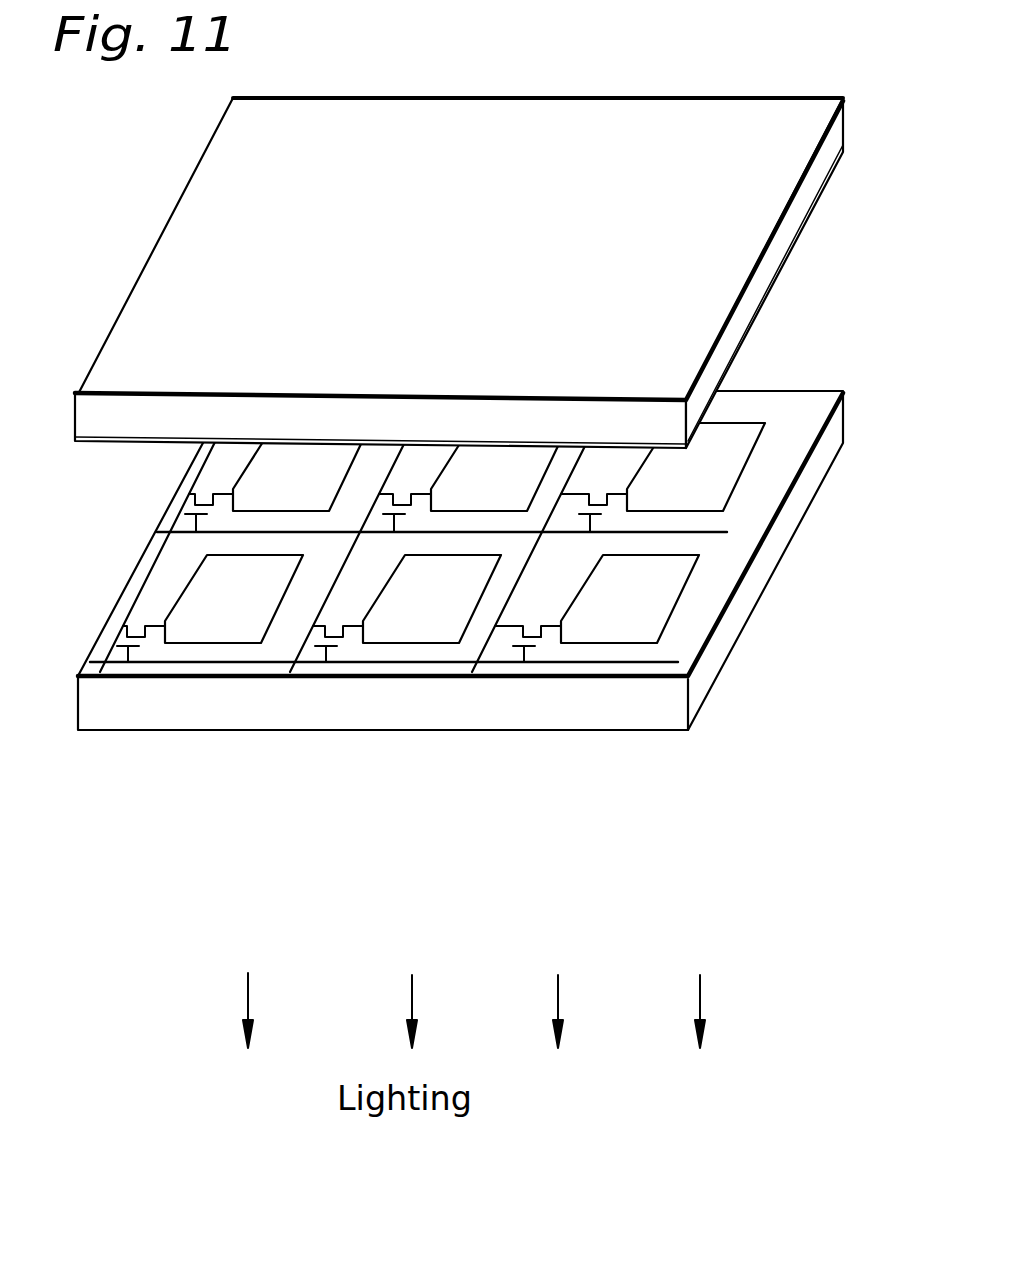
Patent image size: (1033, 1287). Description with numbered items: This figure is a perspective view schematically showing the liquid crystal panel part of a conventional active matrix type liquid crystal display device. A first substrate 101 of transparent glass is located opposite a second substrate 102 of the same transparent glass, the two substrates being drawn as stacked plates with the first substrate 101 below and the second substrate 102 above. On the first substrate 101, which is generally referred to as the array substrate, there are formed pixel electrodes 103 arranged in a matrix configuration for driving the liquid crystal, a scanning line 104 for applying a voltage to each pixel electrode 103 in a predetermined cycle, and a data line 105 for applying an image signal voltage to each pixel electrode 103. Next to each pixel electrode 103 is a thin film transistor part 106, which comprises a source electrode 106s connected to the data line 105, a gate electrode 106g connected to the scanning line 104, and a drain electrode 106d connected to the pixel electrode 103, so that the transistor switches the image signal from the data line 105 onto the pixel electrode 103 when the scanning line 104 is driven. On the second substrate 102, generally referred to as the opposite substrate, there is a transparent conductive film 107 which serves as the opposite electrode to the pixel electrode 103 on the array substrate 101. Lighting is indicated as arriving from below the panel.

The first substrate 101 is at (817, 462).
The second substrate 102 is at (737, 100).
The pixel electrode 103 is at (678, 601).
The scanning line 104 is at (727, 533).
The data line 105 is at (326, 600).
The thin film transistor part 106 is at (601, 740).
The source electrode 106s is at (505, 627).
The gate electrode 106g is at (526, 647).
The drain electrode 106d is at (639, 710).
The transparent conductive film 107 is at (772, 297).